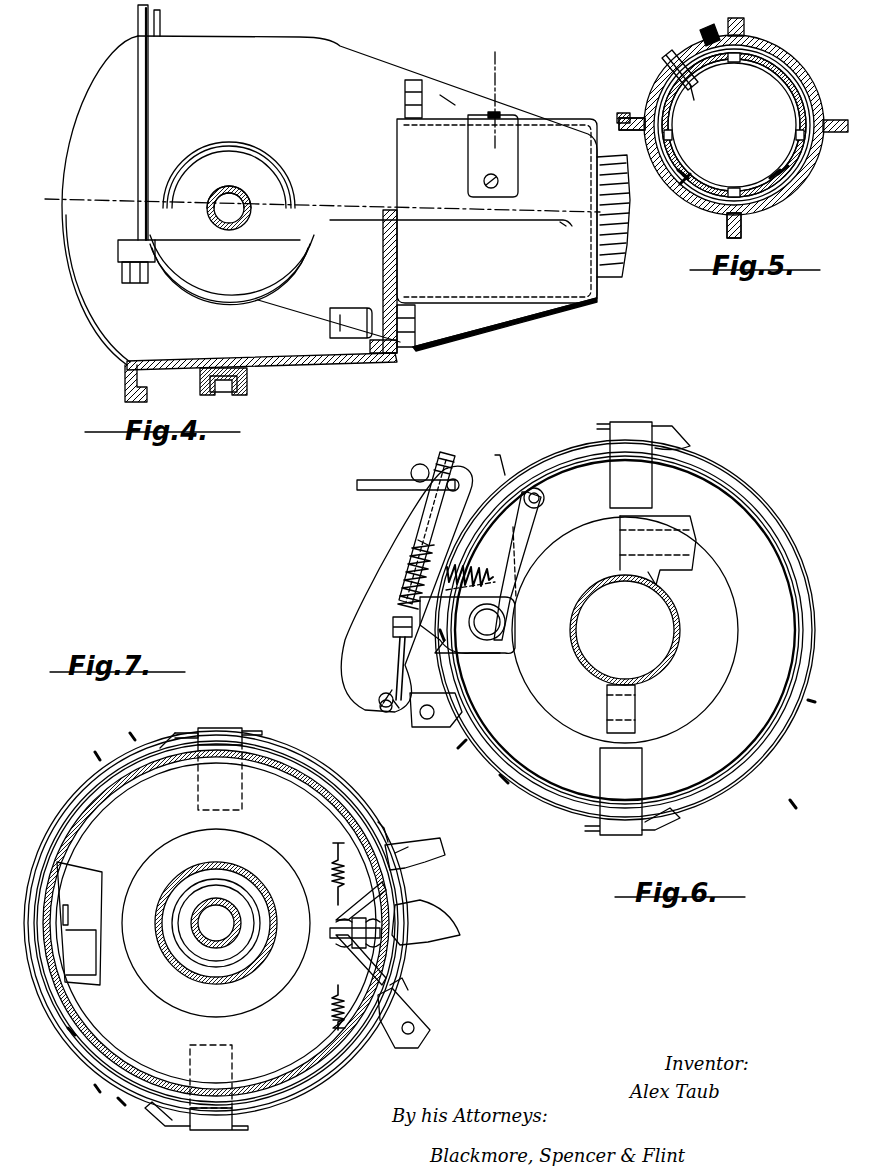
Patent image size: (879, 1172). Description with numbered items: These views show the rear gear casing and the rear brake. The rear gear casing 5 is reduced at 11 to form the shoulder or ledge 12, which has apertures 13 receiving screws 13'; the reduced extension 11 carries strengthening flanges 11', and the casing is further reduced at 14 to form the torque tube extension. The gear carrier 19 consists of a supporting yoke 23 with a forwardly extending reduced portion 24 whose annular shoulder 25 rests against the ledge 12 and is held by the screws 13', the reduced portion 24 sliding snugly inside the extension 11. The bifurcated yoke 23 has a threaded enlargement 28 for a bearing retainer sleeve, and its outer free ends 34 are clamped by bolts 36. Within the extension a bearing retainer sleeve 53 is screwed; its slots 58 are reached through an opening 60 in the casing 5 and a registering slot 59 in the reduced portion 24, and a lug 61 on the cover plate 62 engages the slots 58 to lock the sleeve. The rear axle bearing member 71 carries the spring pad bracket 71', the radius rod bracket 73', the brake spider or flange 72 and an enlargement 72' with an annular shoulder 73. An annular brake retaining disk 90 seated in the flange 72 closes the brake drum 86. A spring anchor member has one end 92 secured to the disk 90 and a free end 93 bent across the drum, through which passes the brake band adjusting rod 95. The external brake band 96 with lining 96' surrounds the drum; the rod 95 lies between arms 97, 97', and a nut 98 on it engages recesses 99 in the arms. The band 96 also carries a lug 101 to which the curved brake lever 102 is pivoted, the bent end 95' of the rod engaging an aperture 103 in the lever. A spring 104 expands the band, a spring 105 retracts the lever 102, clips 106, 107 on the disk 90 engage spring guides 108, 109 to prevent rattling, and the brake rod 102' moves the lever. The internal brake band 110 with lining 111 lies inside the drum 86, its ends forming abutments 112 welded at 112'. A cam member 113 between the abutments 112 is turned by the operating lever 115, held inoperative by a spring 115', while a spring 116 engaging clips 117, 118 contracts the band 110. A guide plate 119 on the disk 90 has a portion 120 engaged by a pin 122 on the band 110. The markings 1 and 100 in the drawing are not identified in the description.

In FIG. 4, the casing 1 is at (105, 335).
In FIG. 4, the rear gear casing 5 is at (545, 349).
In FIG. 5, the rear gear casing 5 is at (766, 42).
In FIG. 5, the reduced portion 11 is at (733, 128).
In FIG. 4, the strengthening flanges 11' is at (503, 220).
In FIG. 5, the strengthening flanges 11' is at (673, 159).
In FIG. 4, the shoulder or ledge 12 is at (398, 264).
In FIG. 4, the apertures 13 is at (383, 358).
In FIG. 4, the screws 13' is at (417, 339).
In FIG. 4, the further reduced portion 14 is at (607, 272).
In FIG. 4, the gear support or carrier 19 is at (262, 305).
In FIG. 4, the supporting yoke 23 is at (238, 292).
In FIG. 5, the reduced portion 24 is at (790, 55).
In FIG. 4, the annular shoulder 25 is at (368, 293).
In FIG. 4, the internally threaded enlargement 28 is at (215, 283).
In FIG. 4, the outer free end 34 is at (125, 252).
In FIG. 4, the bolts 36 is at (136, 218).
In FIG. 5, the bearing retainer sleeve 53 is at (795, 105).
In FIG. 5, the slots 58 is at (745, 60).
In FIG. 5, the slots 59 is at (686, 80).
In FIG. 5, the opening 60 is at (668, 57).
In FIG. 5, the lug 61 is at (700, 80).
In FIG. 5, the cover plate 62 is at (692, 38).
In FIG. 6, the rear axle bearing member 71 is at (642, 630).
In FIG. 6, the spring pad bracket 71' is at (684, 550).
In FIG. 6, the brake spider or flange 72 is at (625, 630).
In FIG. 7, the brake spider or flange 72 is at (216, 917).
In FIG. 4, the enlargement 72' is at (258, 194).
In FIG. 7, the enlargement 72' is at (216, 908).
In FIG. 4, the annular shoulder 73 is at (229, 165).
In FIG. 6, the radius rod bracket 73' is at (641, 709).
In FIG. 6, the brake drum 86 is at (512, 752).
In FIG. 7, the brake drum 86 is at (110, 1045).
In FIG. 6, the brake retaining plate or disk 90 is at (745, 760).
In FIG. 7, the brake retaining plate or disk 90 is at (216, 923).
In FIG. 6, the spring anchor member end 92 is at (503, 660).
In FIG. 6, the free end of anchor member 93 is at (393, 626).
In FIG. 7, the free end of anchor member 93 is at (435, 938).
In FIG. 6, the brake band adjusting rod 95 is at (363, 668).
In FIG. 6, the laterally bent end 95' is at (377, 716).
In FIG. 6, the external brake band 96 is at (627, 719).
In FIG. 7, the external brake band 96 is at (97, 919).
In FIG. 6, the brake lining 96' is at (502, 789).
In FIG. 7, the brake lining 96' is at (56, 1038).
In FIG. 6, the arm 97 is at (416, 528).
In FIG. 7, the arm 97' is at (426, 863).
In FIG. 6, the nut 98 is at (418, 487).
In FIG. 6, the recesses 99 is at (412, 540).
In FIG. 7, the recesses 99 is at (415, 845).
In FIG. 6, the stop 100 is at (485, 500).
In FIG. 7, the stop 100 is at (372, 825).
In FIG. 6, the lug or member 101 is at (435, 726).
In FIG. 7, the lug or member 101 is at (400, 1030).
In FIG. 6, the curved brake lever 102 is at (397, 589).
In FIG. 6, the brake rod 102' is at (406, 472).
In FIG. 6, the aperture 103 is at (380, 707).
In FIG. 6, the spring 104 is at (405, 572).
In FIG. 6, the spring 105 is at (492, 568).
In FIG. 6, the brake band clip or guide 106 is at (620, 826).
In FIG. 7, the brake band clip or guide 106 is at (210, 1120).
In FIG. 6, the brake band clip or guide 107 is at (630, 432).
In FIG. 7, the brake band clip or guide 107 is at (225, 740).
In FIG. 6, the spring guide 108 is at (675, 828).
In FIG. 7, the spring guide 108 is at (165, 1118).
In FIG. 6, the spring guide 109 is at (688, 440).
In FIG. 7, the spring guide 109 is at (258, 735).
In FIG. 7, the internal or emergency brake band 110 is at (285, 790).
In FIG. 7, the brake lining 111 is at (265, 770).
In FIG. 7, the abutment 112 is at (343, 933).
In FIG. 7, the weld 112' is at (341, 933).
In FIG. 7, the cam member 113 is at (385, 928).
In FIG. 6, the operating lever 115 is at (532, 564).
In FIG. 6, the spring 115' is at (487, 637).
In FIG. 7, the spring 116 is at (333, 1000).
In FIG. 7, the clip 117 is at (333, 1025).
In FIG. 7, the clip 118 is at (333, 848).
In FIG. 7, the guide plate 119 is at (85, 945).
In FIG. 7, the lateral portion 120 is at (68, 910).
In FIG. 7, the pin 122 is at (80, 912).